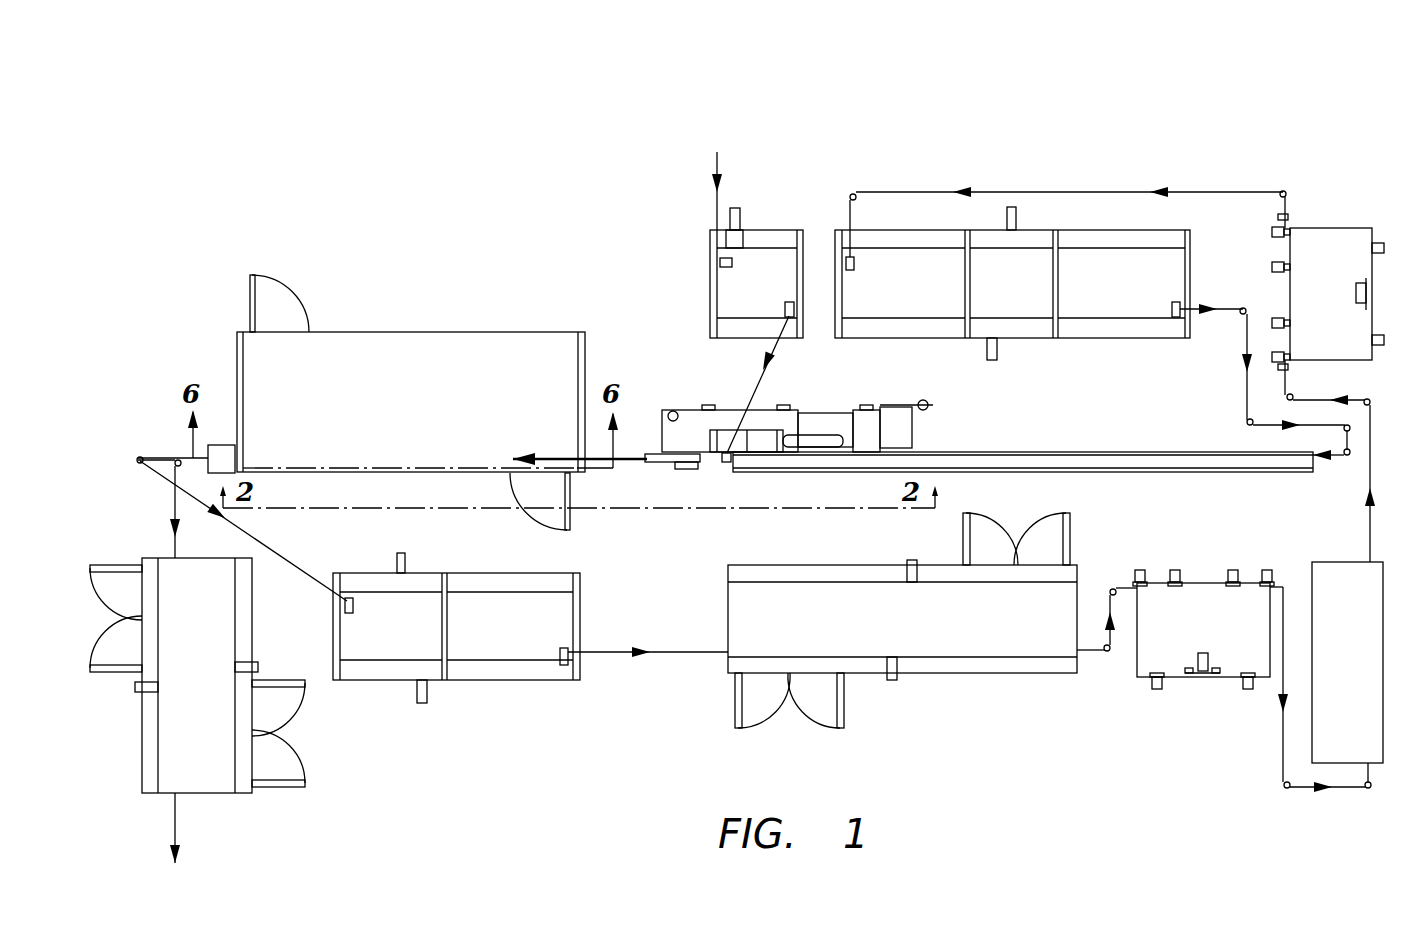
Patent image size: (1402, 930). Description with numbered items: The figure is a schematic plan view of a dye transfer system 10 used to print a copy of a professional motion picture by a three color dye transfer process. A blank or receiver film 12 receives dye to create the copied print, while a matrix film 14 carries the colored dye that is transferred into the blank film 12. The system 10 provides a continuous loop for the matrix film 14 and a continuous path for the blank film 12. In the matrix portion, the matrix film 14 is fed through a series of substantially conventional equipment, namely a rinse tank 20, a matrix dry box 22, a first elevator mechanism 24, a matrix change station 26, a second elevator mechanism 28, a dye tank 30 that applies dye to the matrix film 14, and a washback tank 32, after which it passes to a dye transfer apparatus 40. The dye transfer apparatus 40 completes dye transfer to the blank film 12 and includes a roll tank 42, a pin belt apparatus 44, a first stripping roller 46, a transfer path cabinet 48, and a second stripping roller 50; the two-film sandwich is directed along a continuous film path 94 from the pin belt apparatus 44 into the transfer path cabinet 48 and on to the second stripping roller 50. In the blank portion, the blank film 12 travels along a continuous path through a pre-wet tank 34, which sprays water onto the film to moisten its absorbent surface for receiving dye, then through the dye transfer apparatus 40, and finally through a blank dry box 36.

The dye transfer system 10 is at (958, 756).
The blank or receiver film 12 is at (175, 500).
The matrix film 14 is at (287, 557).
The rinse tank 20 is at (500, 680).
The matrix dry box 22 is at (868, 673).
The first elevator mechanism 24 is at (1173, 678).
The matrix change station 26 is at (1330, 565).
The second elevator mechanism 28 is at (1335, 228).
The dye tank 30 is at (1028, 338).
The washback tank 32 is at (1175, 472).
The pre-wet tank 34 is at (773, 230).
The blank dry box 36 is at (215, 793).
The dye transfer apparatus 40 is at (634, 357).
The roll tank 42 is at (758, 410).
The pin belt apparatus 44 is at (912, 435).
The first stripping roller 46 is at (688, 470).
The transfer path cabinet 48 is at (463, 332).
The second stripping roller 50 is at (230, 445).
The continuous film path 94 is at (561, 452).